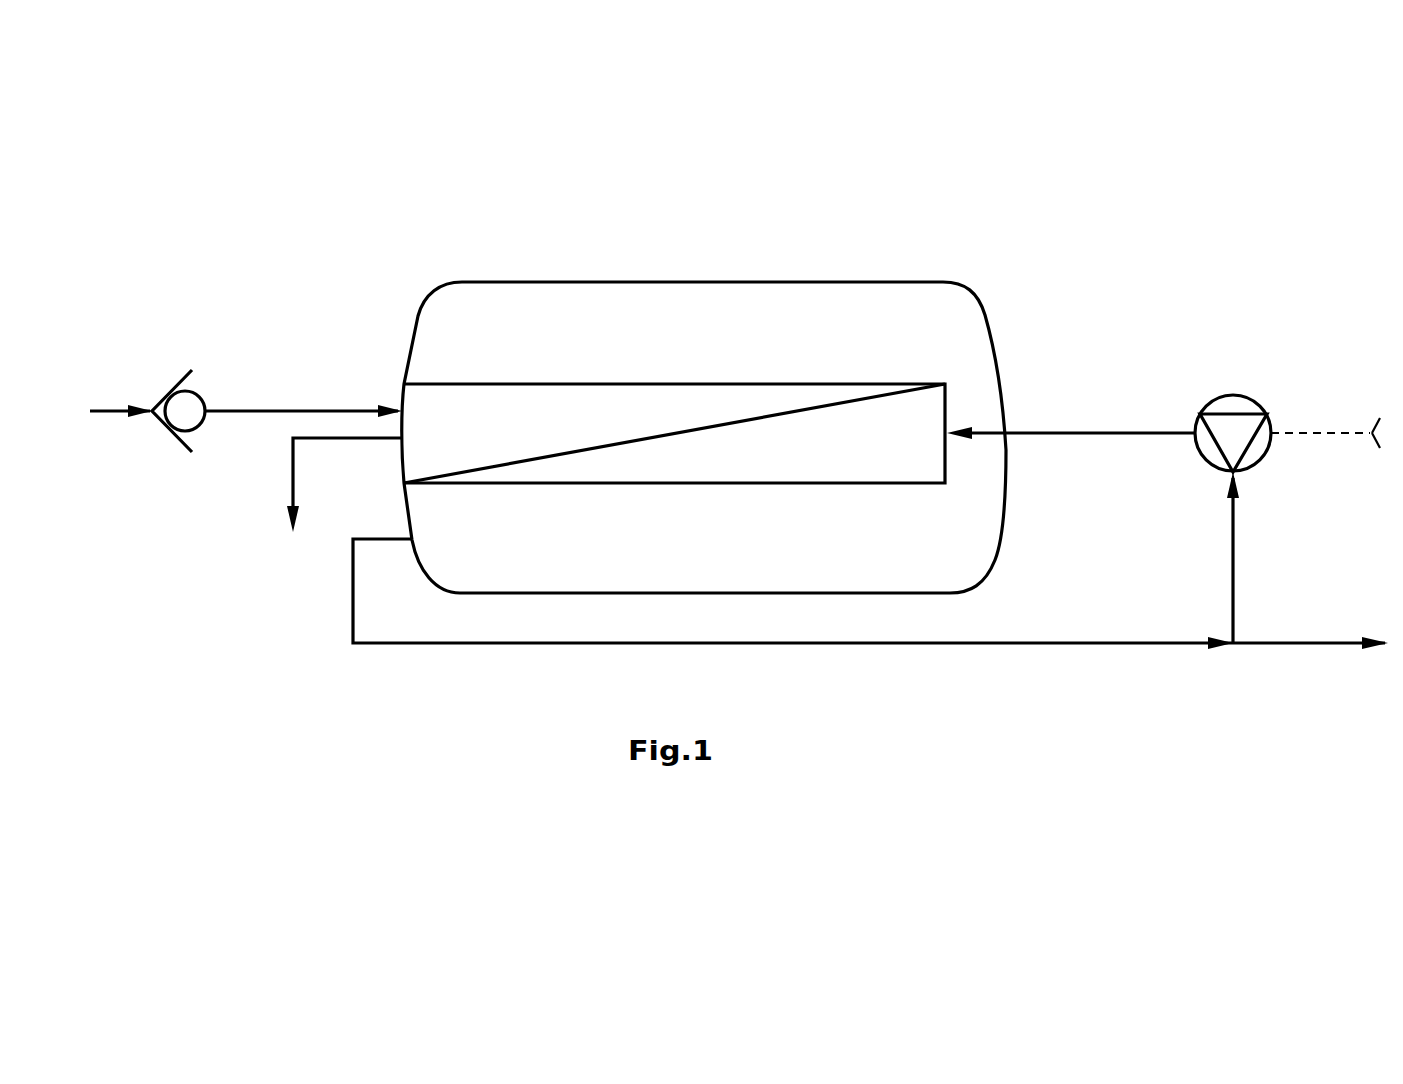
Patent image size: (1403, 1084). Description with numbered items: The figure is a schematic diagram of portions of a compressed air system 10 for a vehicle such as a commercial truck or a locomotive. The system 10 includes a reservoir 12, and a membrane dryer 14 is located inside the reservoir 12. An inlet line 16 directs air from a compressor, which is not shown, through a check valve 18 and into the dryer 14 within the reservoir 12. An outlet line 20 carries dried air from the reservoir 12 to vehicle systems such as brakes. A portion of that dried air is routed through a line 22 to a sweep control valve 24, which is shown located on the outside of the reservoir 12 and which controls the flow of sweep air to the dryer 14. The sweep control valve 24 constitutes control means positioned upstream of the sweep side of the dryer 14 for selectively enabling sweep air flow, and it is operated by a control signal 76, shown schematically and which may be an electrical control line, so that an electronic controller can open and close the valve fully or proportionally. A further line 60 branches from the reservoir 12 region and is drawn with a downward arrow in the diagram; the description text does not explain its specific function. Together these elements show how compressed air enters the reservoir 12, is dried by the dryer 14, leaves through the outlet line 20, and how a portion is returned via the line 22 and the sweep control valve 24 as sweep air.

The compressed air system 10 is at (833, 684).
The reservoir 12 is at (798, 283).
The membrane dryer 14 is at (548, 384).
The inlet line 16 is at (110, 408).
The check valve 18 is at (177, 382).
The outlet line 20 is at (497, 645).
The line 22 is at (1232, 557).
The sweep control valve 24 is at (1227, 394).
The drain line 60 is at (292, 486).
The control signal 76 is at (1305, 433).